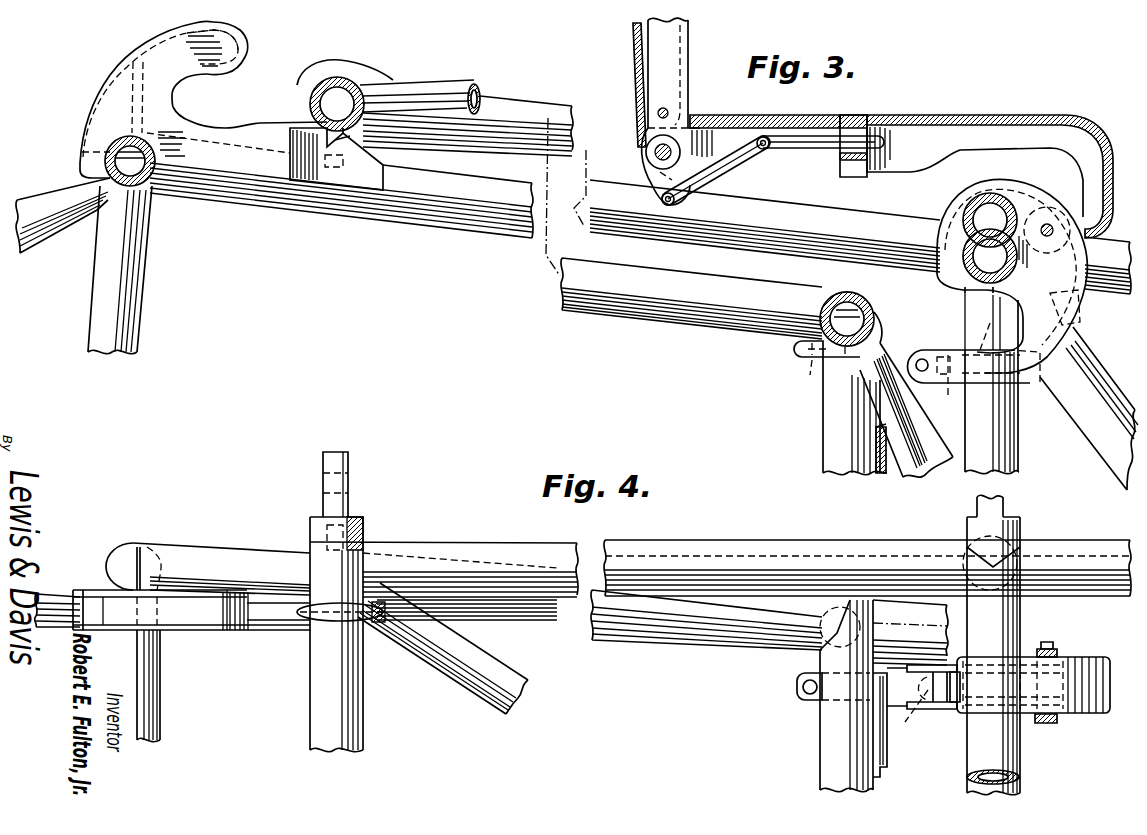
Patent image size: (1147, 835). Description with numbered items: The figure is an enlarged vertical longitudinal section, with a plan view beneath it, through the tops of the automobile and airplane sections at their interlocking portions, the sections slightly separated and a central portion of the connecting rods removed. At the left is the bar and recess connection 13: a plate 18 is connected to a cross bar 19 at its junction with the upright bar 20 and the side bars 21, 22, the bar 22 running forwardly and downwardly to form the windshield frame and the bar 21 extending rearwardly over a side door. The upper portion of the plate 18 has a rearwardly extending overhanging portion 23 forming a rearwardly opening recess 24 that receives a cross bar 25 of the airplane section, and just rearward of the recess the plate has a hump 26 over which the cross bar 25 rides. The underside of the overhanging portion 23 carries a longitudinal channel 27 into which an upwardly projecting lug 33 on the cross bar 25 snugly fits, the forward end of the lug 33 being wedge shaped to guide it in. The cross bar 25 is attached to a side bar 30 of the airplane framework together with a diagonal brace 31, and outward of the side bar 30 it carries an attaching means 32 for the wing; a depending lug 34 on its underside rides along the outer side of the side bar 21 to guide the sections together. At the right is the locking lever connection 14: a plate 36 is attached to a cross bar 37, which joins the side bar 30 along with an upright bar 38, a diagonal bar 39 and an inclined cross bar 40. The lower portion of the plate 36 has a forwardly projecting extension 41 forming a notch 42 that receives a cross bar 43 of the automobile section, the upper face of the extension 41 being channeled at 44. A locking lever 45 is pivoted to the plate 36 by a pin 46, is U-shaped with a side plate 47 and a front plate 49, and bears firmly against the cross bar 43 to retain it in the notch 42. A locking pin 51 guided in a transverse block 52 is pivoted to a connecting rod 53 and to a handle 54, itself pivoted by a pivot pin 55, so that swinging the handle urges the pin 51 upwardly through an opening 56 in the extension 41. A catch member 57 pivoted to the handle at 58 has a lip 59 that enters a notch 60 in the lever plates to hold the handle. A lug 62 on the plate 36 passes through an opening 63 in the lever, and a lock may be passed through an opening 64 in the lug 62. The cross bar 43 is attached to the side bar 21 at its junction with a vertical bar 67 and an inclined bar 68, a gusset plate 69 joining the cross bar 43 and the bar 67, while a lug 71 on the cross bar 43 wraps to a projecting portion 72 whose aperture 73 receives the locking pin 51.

In FIG. 3, the bar and recess connection 13 is at (199, 187).
In FIG. 3, the locking lever connection 14 is at (990, 153).
In FIG. 3, the plate 18 is at (97, 110).
In FIG. 4, the plate 18 is at (92, 590).
In FIG. 3, the cross bar 19 is at (105, 158).
In FIG. 4, the cross bar 19 is at (160, 688).
In FIG. 3, the upright bar 20 is at (148, 277).
In FIG. 3, the side bar 21 is at (290, 207).
In FIG. 4, the side bar 21 is at (255, 550).
In FIG. 3, the side bar 22 is at (68, 240).
In FIG. 4, the side bar 22 is at (45, 594).
In FIG. 3, the overhanging portion 23 is at (250, 42).
In FIG. 4, the overhanging portion 23 is at (225, 632).
In FIG. 3, the recess 24 is at (192, 104).
In FIG. 3, the cross bar 25 is at (305, 108).
In FIG. 4, the cross bar 25 is at (312, 700).
In FIG. 3, the hump 26 is at (262, 122).
In FIG. 4, the hump 26 is at (278, 632).
In FIG. 3, the channel 27 is at (240, 62).
In FIG. 3, the side bar 30 is at (518, 92).
In FIG. 4, the side bar 30 is at (545, 545).
In FIG. 3, the diagonal brace 31 is at (455, 85).
In FIG. 4, the diagonal brace 31 is at (475, 690).
In FIG. 4, the attaching means 32 is at (348, 458).
In FIG. 3, the lug 33 is at (362, 60).
In FIG. 4, the lug 33 is at (358, 603).
In FIG. 3, the depending lug 34 is at (358, 145).
In FIG. 4, the depending lug 34 is at (365, 525).
In FIG. 3, the plate 36 is at (1075, 313).
In FIG. 4, the plate 36 is at (958, 662).
In FIG. 3, the cross bar 37 is at (1015, 278).
In FIG. 4, the cross bar 37 is at (1018, 780).
In FIG. 3, the upright bar 38 is at (1020, 438).
In FIG. 4, the upright bar 38 is at (1015, 525).
In FIG. 3, the diagonal bar 39 is at (1095, 370).
In FIG. 3, the inclined cross bar 40 is at (963, 218).
In FIG. 4, the inclined cross bar 40 is at (1020, 620).
In FIG. 3, the extension 41 is at (940, 346).
In FIG. 4, the extension 41 is at (938, 712).
In FIG. 3, the notch 42 is at (960, 307).
In FIG. 3, the cross bar 43 is at (855, 294).
In FIG. 4, the cross bar 43 is at (822, 740).
In FIG. 3, the channel 44 is at (985, 345).
In FIG. 3, the locking lever 45 is at (962, 114).
In FIG. 4, the locking lever 45 is at (1042, 726).
In FIG. 3, the pin 46 is at (1048, 222).
In FIG. 4, the pin 46 is at (1052, 650).
In FIG. 3, the side plate 47 is at (806, 122).
In FIG. 3, the front plate 49 is at (995, 115).
In FIG. 4, the front plate 49 is at (1005, 675).
In FIG. 3, the locking pin 51 is at (815, 152).
In FIG. 3, the transverse block 52 is at (856, 116).
In FIG. 3, the connecting rod 53 is at (735, 175).
In FIG. 3, the handle 54 is at (690, 105).
In FIG. 3, the pivot pin 55 is at (681, 150).
In FIG. 3, the opening 56 is at (948, 385).
In FIG. 4, the opening 56 is at (918, 702).
In FIG. 3, the catch member 57 is at (636, 60).
In FIG. 3, the pivot 58 is at (658, 112).
In FIG. 3, the lip 59 is at (646, 145).
In FIG. 3, the notch 60 is at (660, 197).
In FIG. 3, the lug 62 is at (920, 348).
In FIG. 4, the lug 62 is at (920, 672).
In FIG. 3, the opening 63 is at (915, 118).
In FIG. 3, the opening 64 is at (916, 366).
In FIG. 3, the vertical bar 67 is at (822, 418).
In FIG. 3, the inclined bar 68 is at (925, 470).
In FIG. 4, the inclined bar 68 is at (920, 625).
In FIG. 3, the gusset plate 69 is at (880, 475).
In FIG. 4, the gusset plate 69 is at (887, 765).
In FIG. 3, the lug 71 is at (853, 352).
In FIG. 4, the lug 71 is at (900, 705).
In FIG. 3, the projecting portion 72 is at (797, 350).
In FIG. 4, the projecting portion 72 is at (800, 700).
In FIG. 3, the aperture 73 is at (805, 372).
In FIG. 4, the aperture 73 is at (797, 682).